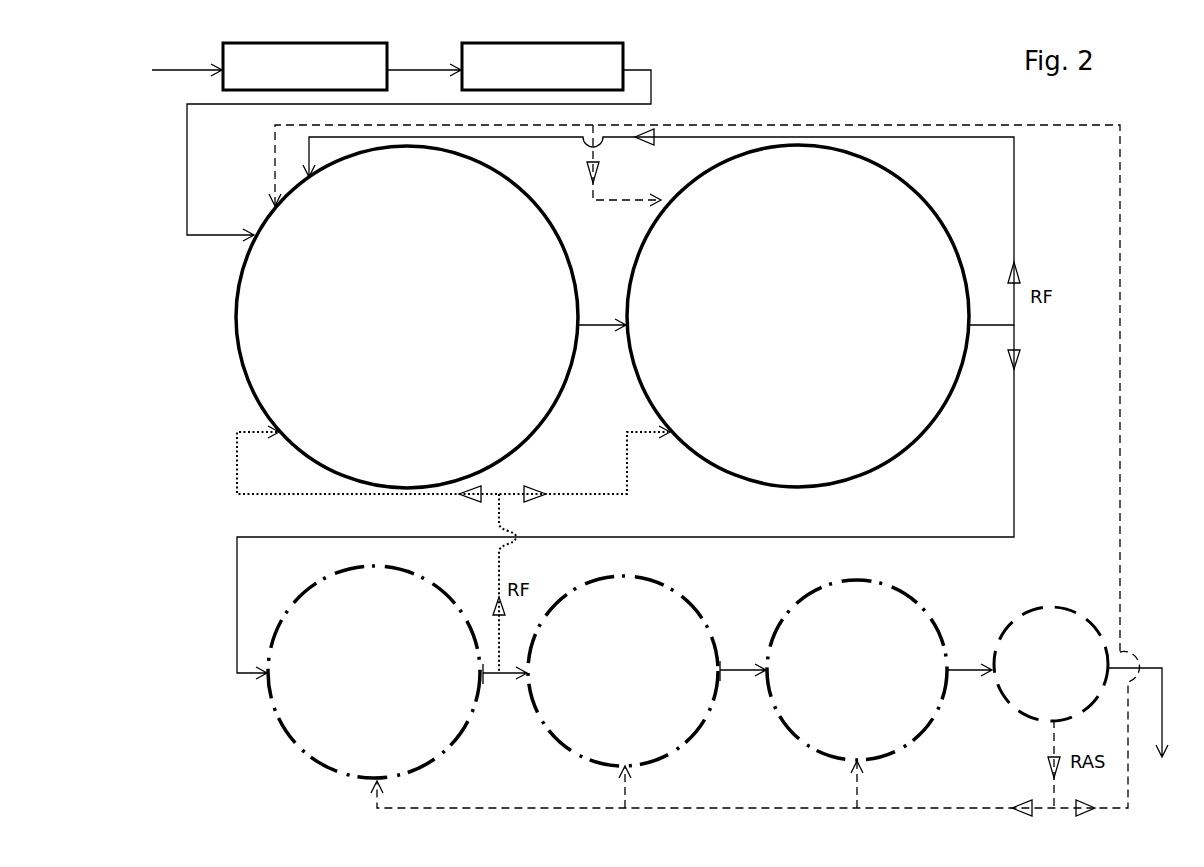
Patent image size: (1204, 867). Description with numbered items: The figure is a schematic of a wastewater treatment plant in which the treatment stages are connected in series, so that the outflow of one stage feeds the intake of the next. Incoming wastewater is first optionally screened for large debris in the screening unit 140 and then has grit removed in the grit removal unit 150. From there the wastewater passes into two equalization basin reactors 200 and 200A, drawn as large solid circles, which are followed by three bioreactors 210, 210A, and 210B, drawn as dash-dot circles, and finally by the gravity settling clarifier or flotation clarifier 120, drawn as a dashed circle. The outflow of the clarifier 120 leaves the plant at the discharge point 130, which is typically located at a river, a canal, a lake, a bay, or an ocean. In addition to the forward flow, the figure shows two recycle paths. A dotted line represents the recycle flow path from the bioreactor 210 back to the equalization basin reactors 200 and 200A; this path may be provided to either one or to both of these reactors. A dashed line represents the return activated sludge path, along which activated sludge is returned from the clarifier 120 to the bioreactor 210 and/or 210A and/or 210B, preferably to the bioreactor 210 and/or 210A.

The screening unit 140 is at (305, 66).
The grit removal unit 150 is at (542, 66).
The equalization basin reactor 200 is at (407, 317).
The equalization basin reactor 200A is at (798, 316).
The bioreactor 210 is at (374, 672).
The bioreactor 210A is at (623, 671).
The bioreactor 210B is at (857, 670).
The clarifier 120 is at (1051, 664).
The discharge point 130 is at (1149, 729).